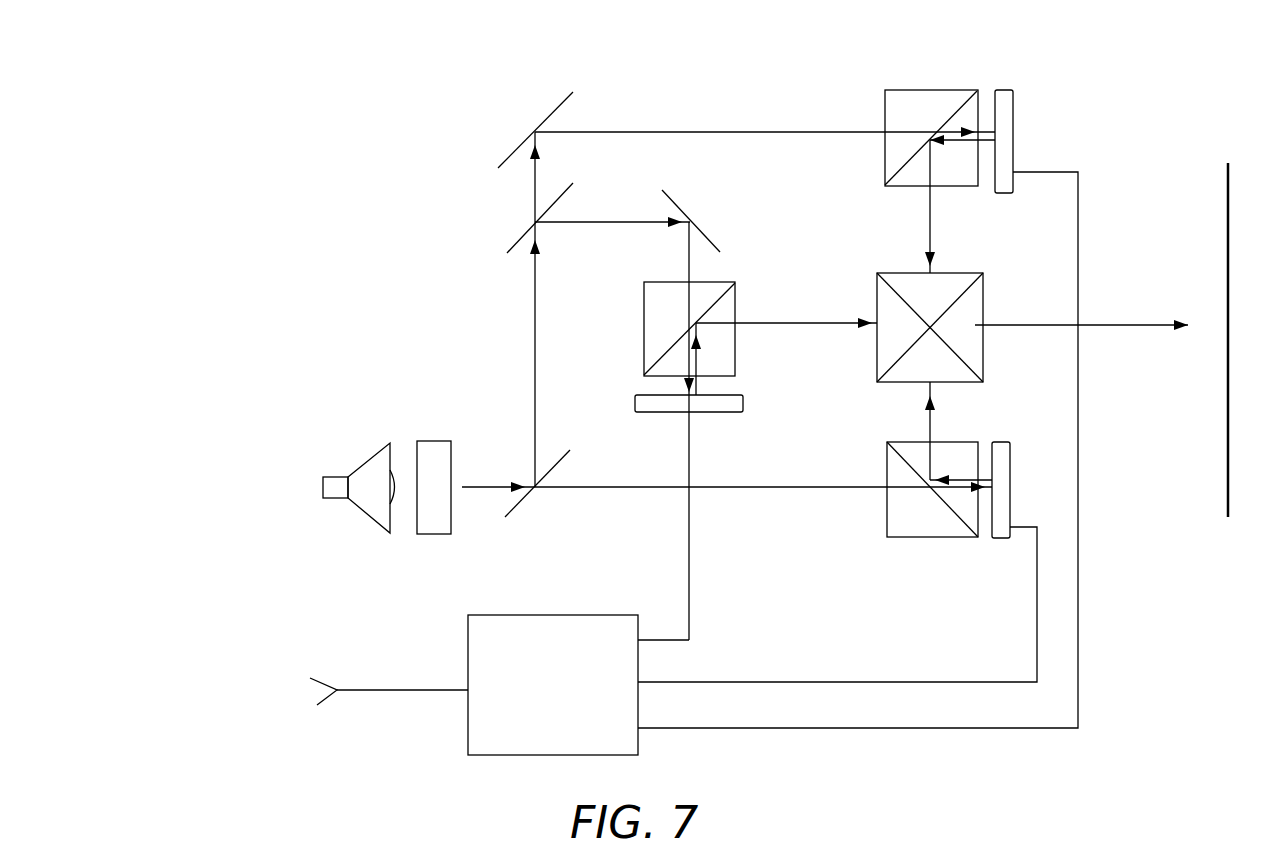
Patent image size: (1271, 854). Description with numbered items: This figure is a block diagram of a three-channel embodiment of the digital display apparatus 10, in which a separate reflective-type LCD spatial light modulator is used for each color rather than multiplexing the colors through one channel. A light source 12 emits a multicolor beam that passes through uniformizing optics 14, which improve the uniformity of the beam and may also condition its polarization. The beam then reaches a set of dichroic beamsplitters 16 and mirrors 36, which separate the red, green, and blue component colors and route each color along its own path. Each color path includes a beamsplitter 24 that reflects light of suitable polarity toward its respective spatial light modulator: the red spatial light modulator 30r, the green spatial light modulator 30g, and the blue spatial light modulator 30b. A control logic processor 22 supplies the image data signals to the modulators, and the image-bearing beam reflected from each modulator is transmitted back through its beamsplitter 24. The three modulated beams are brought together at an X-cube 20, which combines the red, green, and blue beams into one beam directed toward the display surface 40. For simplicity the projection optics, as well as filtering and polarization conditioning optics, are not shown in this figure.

The digital display apparatus 10 is at (370, 160).
The light source 12 is at (365, 512).
The uniformizing optics 14 is at (435, 441).
The dichroic beamsplitters 16 is at (525, 500).
The mirrors 36 is at (507, 157).
The beamsplitter 24 is at (738, 290).
The green spatial light modulator 30g is at (745, 405).
The blue spatial light modulator 30b is at (1005, 194).
The red spatial light modulator 30r is at (1012, 497).
The X-cube 20 is at (985, 348).
The control logic processor 22 is at (468, 722).
The display surface 40 is at (1228, 498).